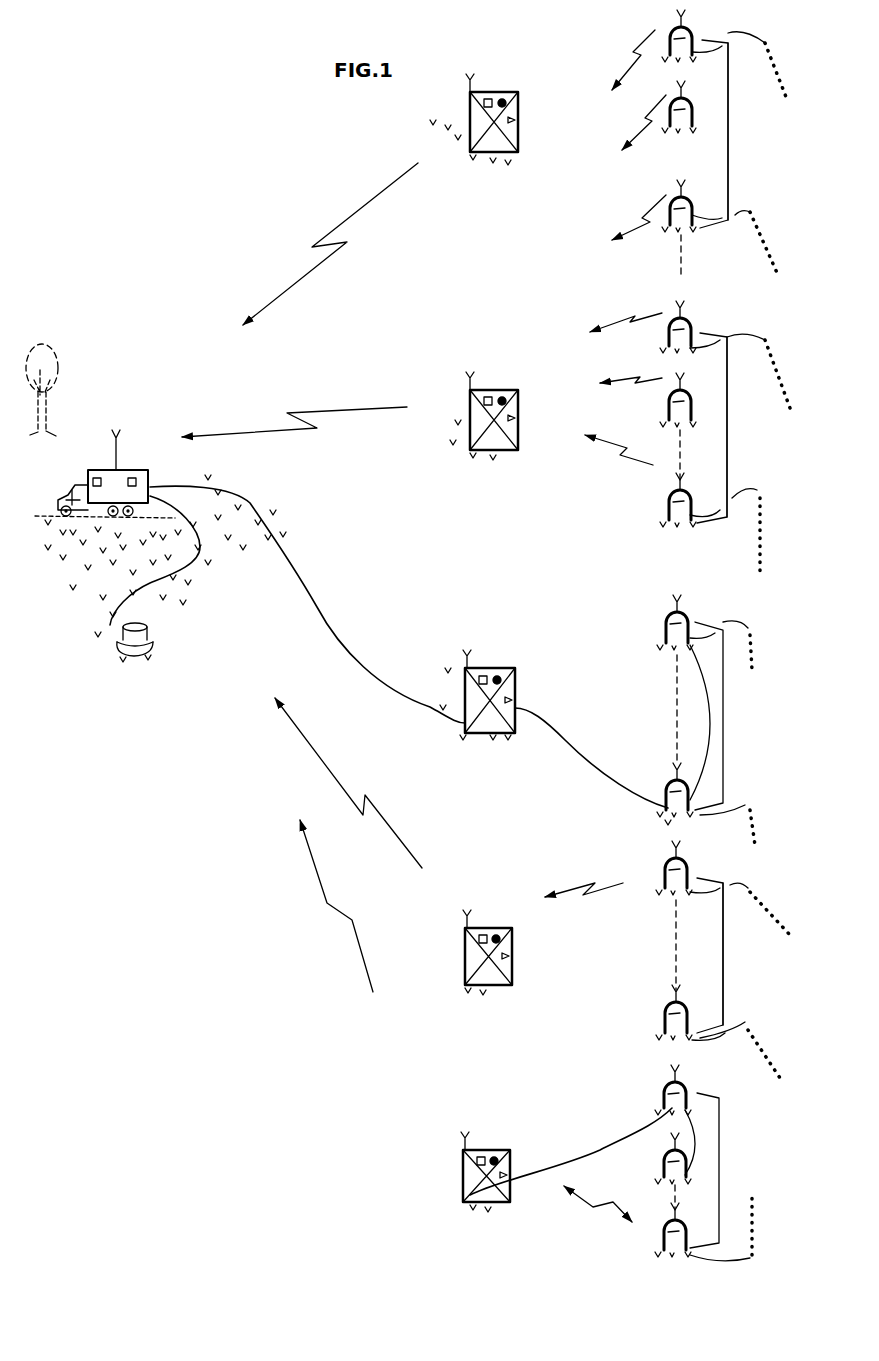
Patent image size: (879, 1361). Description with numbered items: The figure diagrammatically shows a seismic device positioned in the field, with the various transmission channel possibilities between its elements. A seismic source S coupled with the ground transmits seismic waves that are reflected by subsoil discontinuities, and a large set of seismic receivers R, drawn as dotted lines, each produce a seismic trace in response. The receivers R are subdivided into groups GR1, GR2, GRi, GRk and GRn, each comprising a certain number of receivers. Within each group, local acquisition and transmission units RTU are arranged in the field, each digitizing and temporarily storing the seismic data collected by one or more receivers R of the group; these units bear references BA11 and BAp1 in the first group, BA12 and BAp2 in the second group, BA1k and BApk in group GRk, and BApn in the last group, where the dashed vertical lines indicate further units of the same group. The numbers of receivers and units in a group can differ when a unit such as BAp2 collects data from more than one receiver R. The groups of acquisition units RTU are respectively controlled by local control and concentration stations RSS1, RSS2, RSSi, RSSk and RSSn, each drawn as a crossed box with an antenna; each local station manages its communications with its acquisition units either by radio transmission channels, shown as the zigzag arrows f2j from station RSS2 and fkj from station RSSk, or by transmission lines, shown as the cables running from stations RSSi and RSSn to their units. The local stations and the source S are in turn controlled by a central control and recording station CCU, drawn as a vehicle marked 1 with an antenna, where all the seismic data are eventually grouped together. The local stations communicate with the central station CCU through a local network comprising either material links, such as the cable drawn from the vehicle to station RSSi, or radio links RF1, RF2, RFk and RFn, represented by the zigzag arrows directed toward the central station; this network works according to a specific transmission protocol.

The central control and recording station CCU is at (96, 458).
The central control unit 1 is at (122, 498).
The source S is at (140, 635).
The radio link RF1 is at (330, 244).
The radio link RF2 is at (294, 410).
The radio link RFk is at (348, 783).
The radio link RFn is at (331, 906).
The local control and concentration station RSS1 is at (495, 106).
The local control and concentration station RSS2 is at (495, 409).
The local control and concentration station RSSi is at (489, 690).
The local control and concentration station RSSk is at (492, 946).
The local control and concentration station RSSn is at (490, 1165).
The group of receivers GR1 is at (693, 152).
The group of receivers GR2 is at (679, 418).
The group of receivers GRi is at (711, 710).
The group of receivers GRk is at (722, 959).
The group of receivers GRn is at (663, 1156).
The local acquisition and transmission unit BA11 is at (695, 36).
The local acquisition and transmission unit BAp1 is at (697, 221).
The local acquisition and transmission unit BA12 is at (695, 327).
The local acquisition and transmission unit BAp2 is at (691, 516).
The local acquisition and transmission unit BA1k is at (692, 868).
The local acquisition and transmission unit BApk is at (653, 1012).
The local acquisition and transmission unit BApn is at (650, 1230).
The local acquisition and transmission unit RTU is at (745, 165).
The seismic receiver R is at (778, 60).
The radio transmission channel f2j is at (631, 372).
The radio transmission channel fkj is at (584, 882).